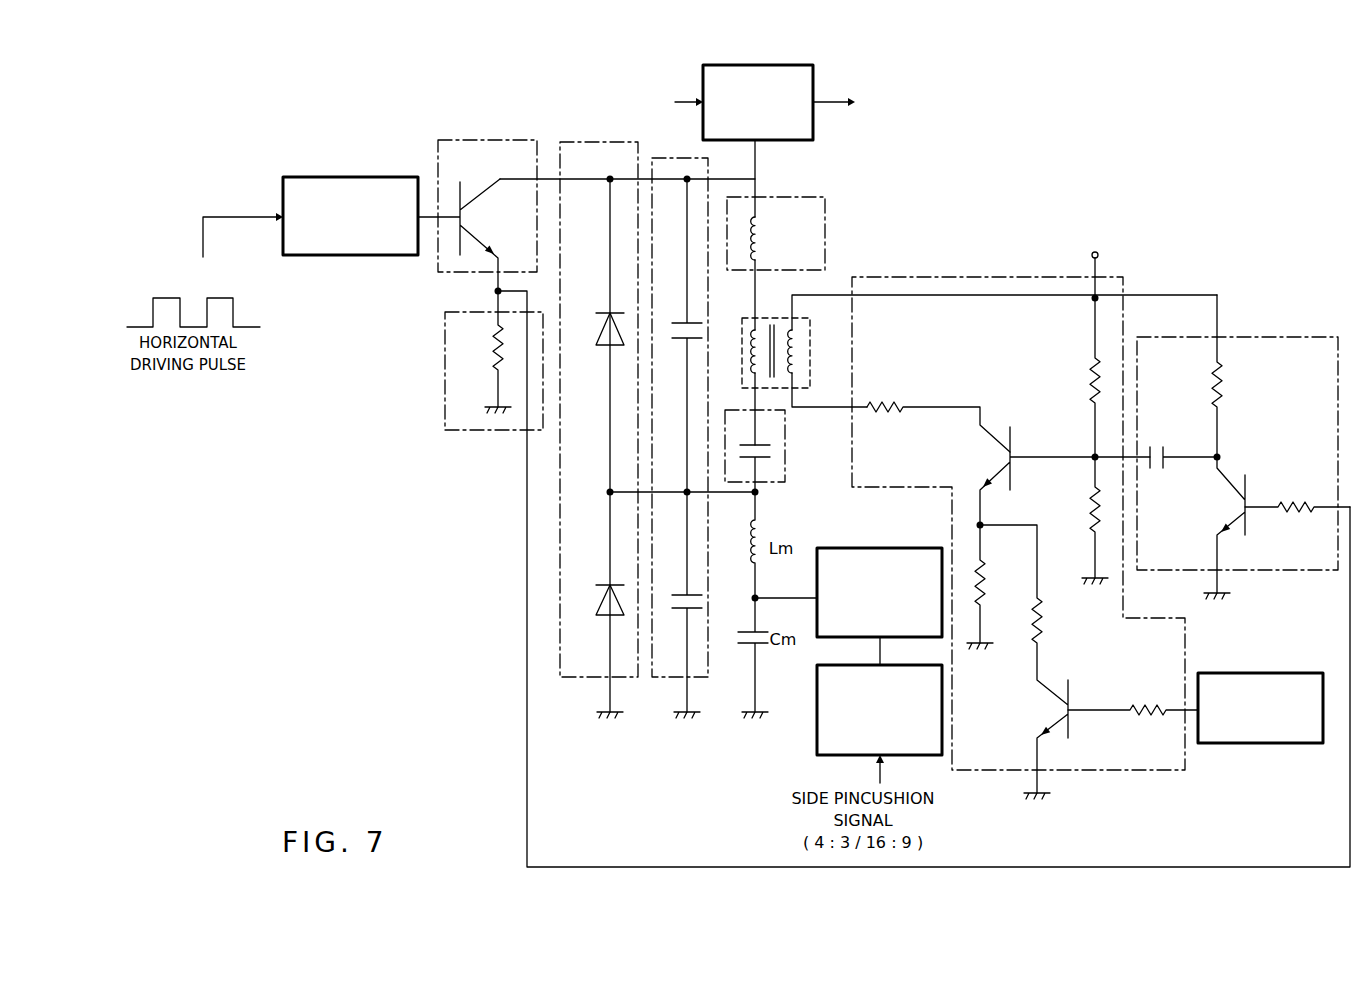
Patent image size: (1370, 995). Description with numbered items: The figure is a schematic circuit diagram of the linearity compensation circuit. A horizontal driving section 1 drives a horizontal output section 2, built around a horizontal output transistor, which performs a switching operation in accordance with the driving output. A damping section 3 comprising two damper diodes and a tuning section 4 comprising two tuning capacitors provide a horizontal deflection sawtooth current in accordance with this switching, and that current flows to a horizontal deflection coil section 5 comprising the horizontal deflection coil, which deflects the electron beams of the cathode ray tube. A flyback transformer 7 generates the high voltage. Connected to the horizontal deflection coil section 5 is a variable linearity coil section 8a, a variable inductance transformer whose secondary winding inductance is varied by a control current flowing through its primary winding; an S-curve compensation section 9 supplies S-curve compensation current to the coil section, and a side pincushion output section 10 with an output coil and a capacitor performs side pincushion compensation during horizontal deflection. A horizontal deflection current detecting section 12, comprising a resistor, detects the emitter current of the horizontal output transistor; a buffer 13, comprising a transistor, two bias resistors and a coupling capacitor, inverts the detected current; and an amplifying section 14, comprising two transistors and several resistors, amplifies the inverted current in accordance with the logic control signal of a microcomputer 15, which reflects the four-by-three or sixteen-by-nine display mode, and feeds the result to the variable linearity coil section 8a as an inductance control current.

The horizontal driving section 1 is at (339, 177).
The horizontal output section 2 is at (483, 140).
The damping section 3 is at (577, 142).
The tuning section 4 is at (657, 677).
The horizontal deflection coil section 5 is at (825, 216).
The flyback transformer 7 is at (813, 80).
The variable linearity coil section 8a is at (812, 323).
The S-curve compensation section 9 is at (785, 470).
The side pincushion output section 10 is at (878, 548).
The horizontal deflection current detecting section 12 is at (445, 378).
The buffer 13 is at (1290, 337).
The amplifying section 14 is at (968, 277).
The microcomputer 15 is at (1258, 743).